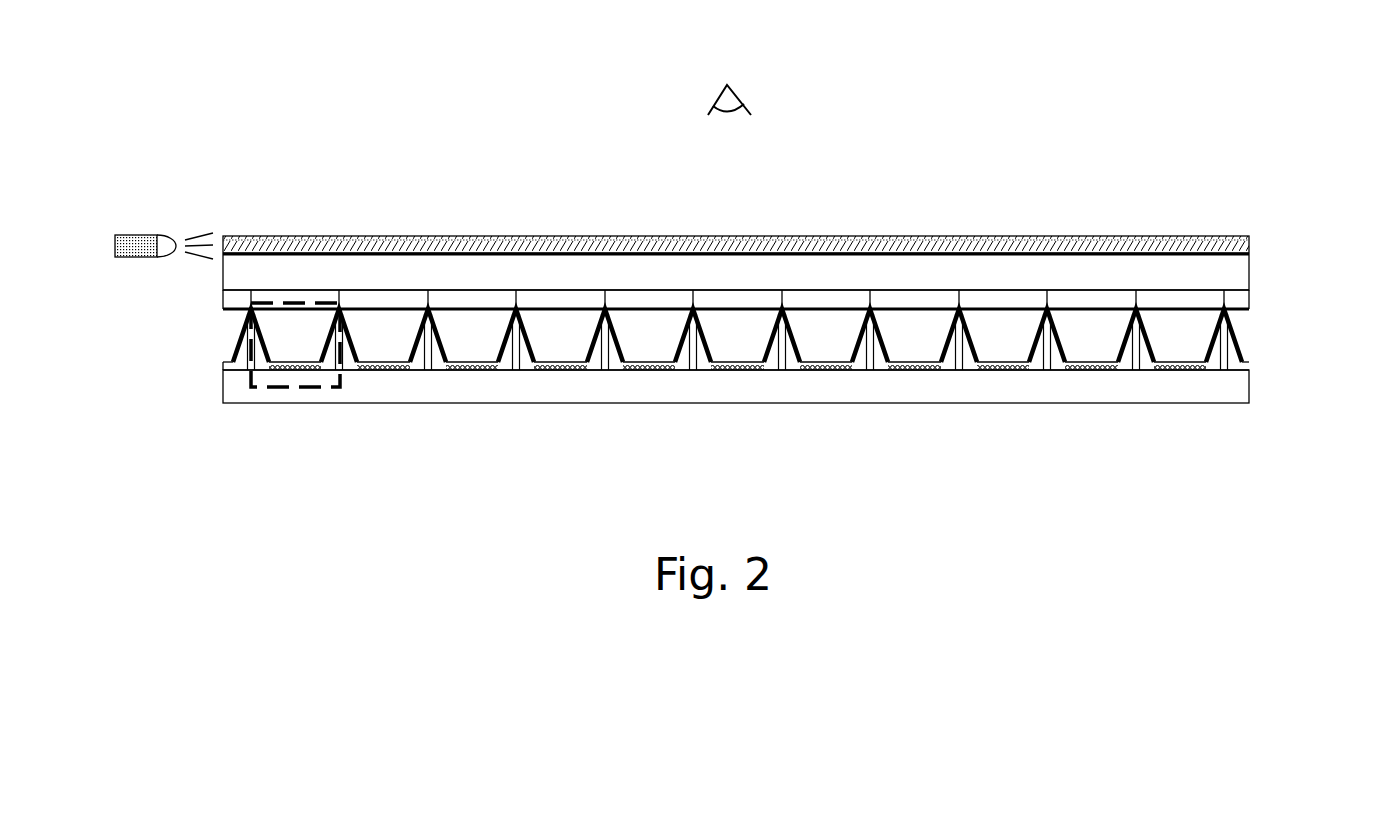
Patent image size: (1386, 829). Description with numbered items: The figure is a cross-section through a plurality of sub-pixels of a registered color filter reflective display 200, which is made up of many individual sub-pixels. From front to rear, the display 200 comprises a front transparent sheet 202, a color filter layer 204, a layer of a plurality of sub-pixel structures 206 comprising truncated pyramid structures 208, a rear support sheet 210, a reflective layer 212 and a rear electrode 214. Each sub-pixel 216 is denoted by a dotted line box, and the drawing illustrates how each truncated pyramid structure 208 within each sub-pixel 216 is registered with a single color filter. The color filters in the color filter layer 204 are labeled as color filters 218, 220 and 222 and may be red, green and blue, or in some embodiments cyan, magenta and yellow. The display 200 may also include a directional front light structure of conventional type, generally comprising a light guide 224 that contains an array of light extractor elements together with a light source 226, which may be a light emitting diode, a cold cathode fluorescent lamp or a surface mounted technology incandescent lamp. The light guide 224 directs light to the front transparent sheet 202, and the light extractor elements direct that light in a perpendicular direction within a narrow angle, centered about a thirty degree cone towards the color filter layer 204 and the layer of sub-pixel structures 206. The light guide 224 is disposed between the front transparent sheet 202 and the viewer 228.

The display 200 is at (1018, 185).
The front transparent sheet 202 is at (1249, 278).
The color filter layer 204 is at (1257, 291).
The layer of a plurality of sub-pixel structures 206 is at (1257, 311).
The truncated pyramid structure 208 is at (537, 343).
The rear support sheet 210 is at (957, 403).
The reflective layer 212 is at (443, 337).
The rear electrode 214 is at (643, 370).
The sub-pixel 216 is at (295, 388).
The color filter 218 is at (640, 302).
The color filter 220 is at (732, 302).
The color filter 222 is at (830, 302).
The light guide 224 is at (400, 235).
The light source 226 is at (142, 235).
The viewer 228 is at (742, 100).